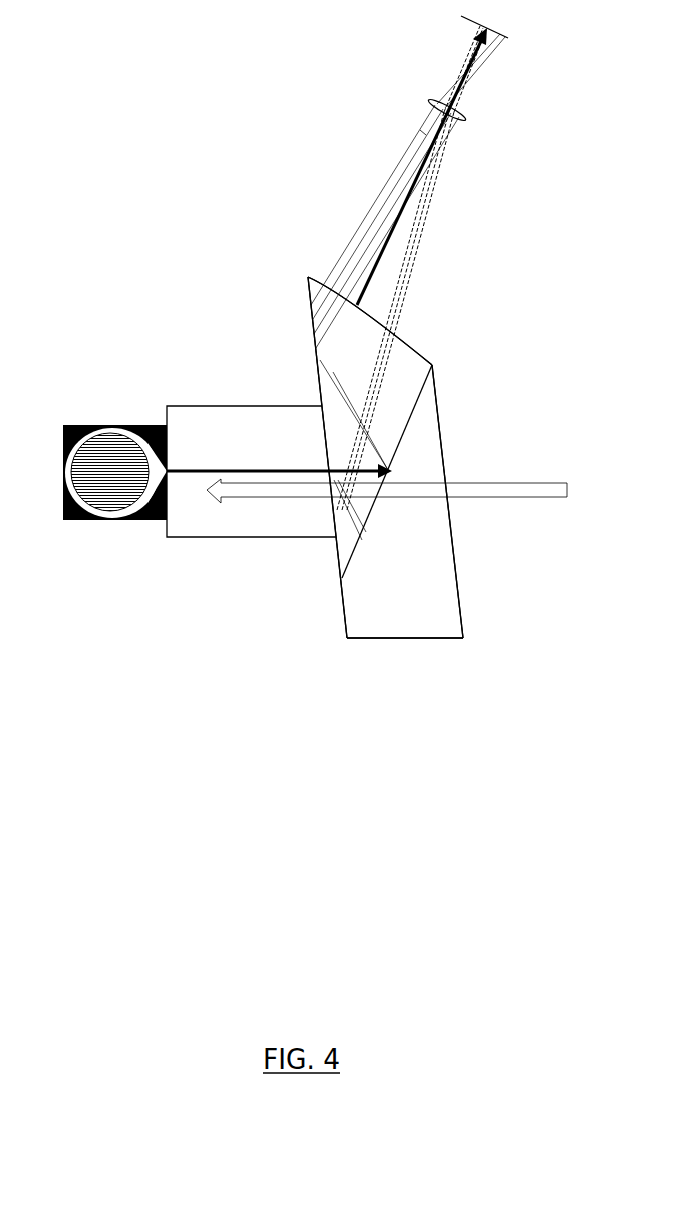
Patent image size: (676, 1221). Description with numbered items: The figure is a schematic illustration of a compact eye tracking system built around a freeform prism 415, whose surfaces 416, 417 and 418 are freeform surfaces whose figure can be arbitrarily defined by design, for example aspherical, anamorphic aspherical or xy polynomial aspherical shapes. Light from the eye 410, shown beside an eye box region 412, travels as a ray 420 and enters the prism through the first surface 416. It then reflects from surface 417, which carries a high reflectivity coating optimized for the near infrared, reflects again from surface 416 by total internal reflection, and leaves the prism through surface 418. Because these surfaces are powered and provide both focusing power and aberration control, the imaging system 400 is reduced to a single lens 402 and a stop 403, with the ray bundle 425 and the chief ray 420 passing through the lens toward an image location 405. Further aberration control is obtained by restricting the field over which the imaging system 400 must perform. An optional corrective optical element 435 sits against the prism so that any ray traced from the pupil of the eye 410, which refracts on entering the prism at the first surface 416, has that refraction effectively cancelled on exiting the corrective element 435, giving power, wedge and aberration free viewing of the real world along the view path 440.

The imaging system 400 is at (460, 136).
The lens 402 is at (418, 100).
The stop 403 is at (412, 135).
The image plane 405 is at (461, 22).
The eye 410 is at (108, 487).
The eye box 412 is at (167, 533).
The prism 415 is at (323, 342).
The first surface 416 is at (320, 380).
The surface 417 is at (392, 469).
The surface 418 is at (348, 297).
The chief ray 420 is at (210, 470).
The ray fan 425 is at (397, 213).
The corrective optical element 435 is at (427, 612).
The view path 440 is at (493, 497).